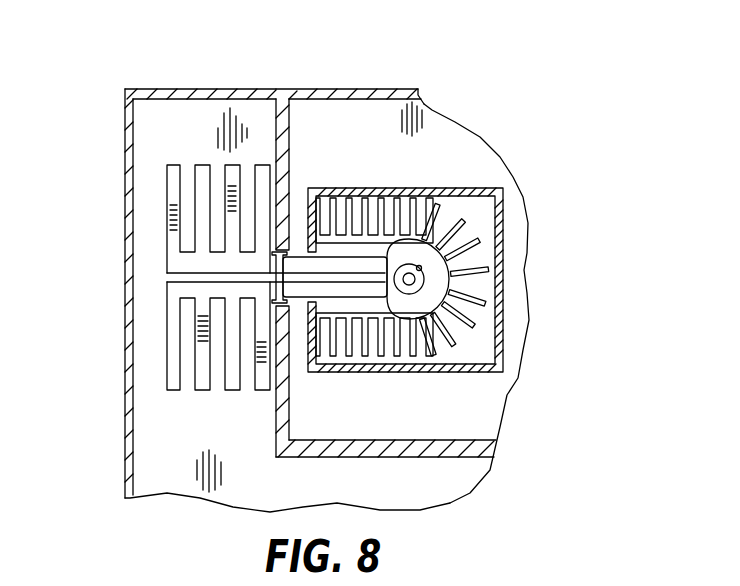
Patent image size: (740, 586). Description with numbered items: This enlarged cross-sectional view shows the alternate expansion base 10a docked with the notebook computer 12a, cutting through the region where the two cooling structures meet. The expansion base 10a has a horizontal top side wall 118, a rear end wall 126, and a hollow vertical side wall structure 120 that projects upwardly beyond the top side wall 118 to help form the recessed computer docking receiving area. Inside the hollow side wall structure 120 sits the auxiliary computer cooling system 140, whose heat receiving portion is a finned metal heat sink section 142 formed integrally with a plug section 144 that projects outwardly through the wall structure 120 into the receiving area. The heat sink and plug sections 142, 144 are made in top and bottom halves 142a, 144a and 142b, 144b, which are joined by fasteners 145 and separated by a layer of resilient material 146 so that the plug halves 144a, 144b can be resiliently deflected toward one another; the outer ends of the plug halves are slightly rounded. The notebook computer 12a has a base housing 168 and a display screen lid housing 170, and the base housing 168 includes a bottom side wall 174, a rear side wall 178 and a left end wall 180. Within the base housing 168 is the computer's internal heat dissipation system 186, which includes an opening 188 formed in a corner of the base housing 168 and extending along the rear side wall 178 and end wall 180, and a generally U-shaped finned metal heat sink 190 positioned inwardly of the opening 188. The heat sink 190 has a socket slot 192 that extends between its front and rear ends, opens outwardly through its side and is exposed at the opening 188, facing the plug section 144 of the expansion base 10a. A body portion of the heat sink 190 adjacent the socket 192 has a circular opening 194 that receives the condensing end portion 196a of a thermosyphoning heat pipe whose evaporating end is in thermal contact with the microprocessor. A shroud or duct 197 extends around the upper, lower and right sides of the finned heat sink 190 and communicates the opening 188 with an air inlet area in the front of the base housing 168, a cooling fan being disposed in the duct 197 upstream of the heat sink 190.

The expansion base 10a is at (202, 70).
The notebook computer 12a is at (360, 65).
The horizontal top side wall 118 is at (437, 458).
The left hollow vertical side wall structure 120 is at (124, 190).
The rear end wall 126 is at (355, 497).
The auxiliary computer cooling system 140 is at (171, 418).
The finned metal heat sink section 142 is at (177, 146).
The top half of heat sink section 142a is at (167, 210).
The bottom half of heat sink section 142b is at (167, 343).
The plug section 144 is at (423, 262).
The top plug half 144a is at (400, 243).
The bottom plug half 144b is at (408, 360).
The fasteners 145 is at (310, 257).
The layer of resilient material 146 is at (167, 277).
The base housing 168 is at (540, 287).
The display screen lid housing 170 is at (438, 96).
The bottom side wall 174 is at (452, 436).
The rear side wall 178 is at (420, 429).
The left end wall 180 is at (289, 398).
The heat dissipation system 186 is at (528, 216).
The opening 188 is at (303, 196).
The U-shaped finned metal heat sink 190 is at (438, 280).
The socket slot 192 is at (333, 304).
The circular opening 194 is at (447, 265).
The condensing end portion 196a is at (437, 304).
The shroud or duct 197 is at (505, 333).